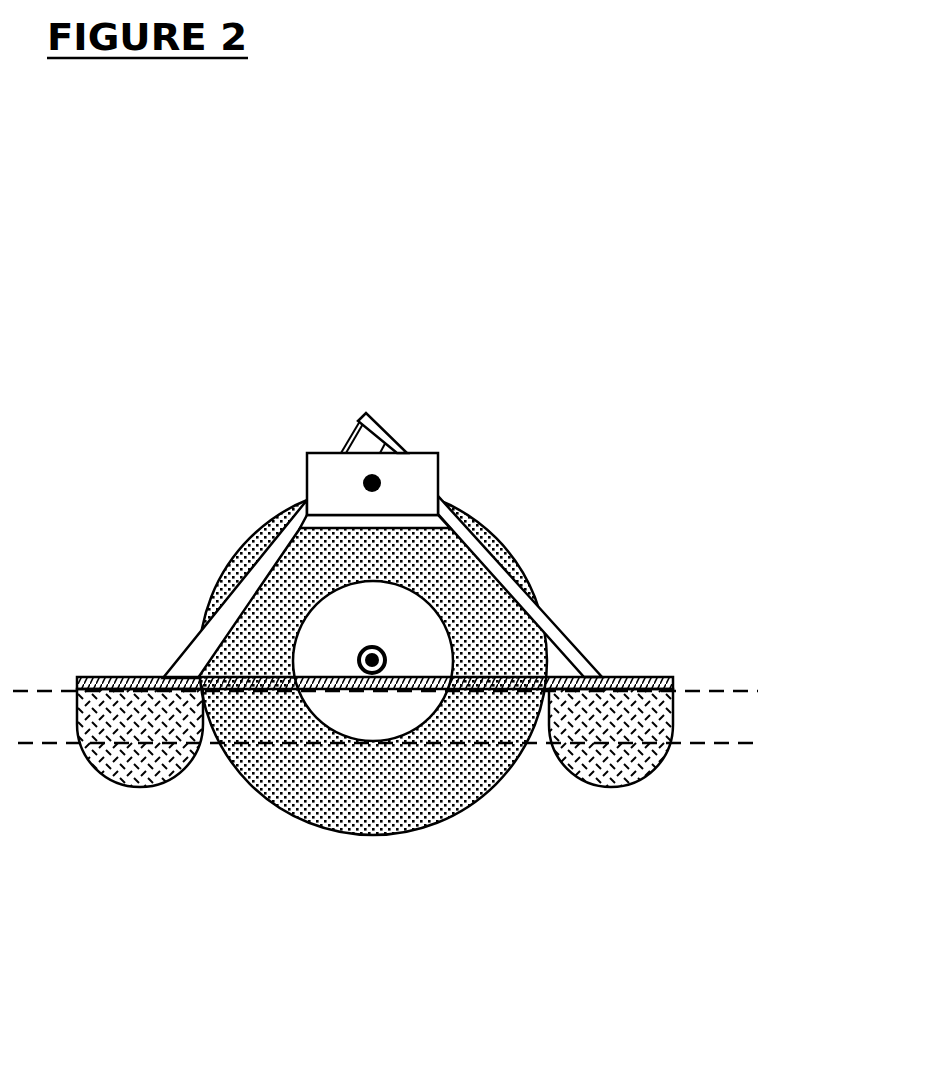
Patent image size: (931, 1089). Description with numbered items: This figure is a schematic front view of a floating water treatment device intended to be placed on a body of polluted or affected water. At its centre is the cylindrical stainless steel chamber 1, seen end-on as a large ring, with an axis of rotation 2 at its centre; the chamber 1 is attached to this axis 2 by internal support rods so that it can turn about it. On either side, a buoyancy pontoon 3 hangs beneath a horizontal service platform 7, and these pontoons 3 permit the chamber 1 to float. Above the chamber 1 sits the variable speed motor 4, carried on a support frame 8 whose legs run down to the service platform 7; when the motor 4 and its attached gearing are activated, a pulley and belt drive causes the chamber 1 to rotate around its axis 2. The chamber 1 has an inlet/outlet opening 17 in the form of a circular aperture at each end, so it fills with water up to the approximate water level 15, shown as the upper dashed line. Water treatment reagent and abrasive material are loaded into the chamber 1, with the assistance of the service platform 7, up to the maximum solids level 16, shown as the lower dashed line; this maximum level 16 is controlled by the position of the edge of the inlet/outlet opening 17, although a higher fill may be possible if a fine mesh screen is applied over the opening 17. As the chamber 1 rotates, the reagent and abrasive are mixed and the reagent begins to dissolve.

The stainless steel chamber 1 is at (230, 537).
The axis of rotation of chamber 2 is at (398, 639).
The buoyancy pontoon 3 is at (170, 797).
The variable speed motor 4 is at (295, 440).
The service platform 7 is at (98, 662).
The support frame for motor and gearing system 8 is at (396, 417).
The approximate water level 15 is at (772, 673).
The maximum solids level in chamber 16 is at (772, 762).
The inlet/outlet opening 17 is at (451, 645).